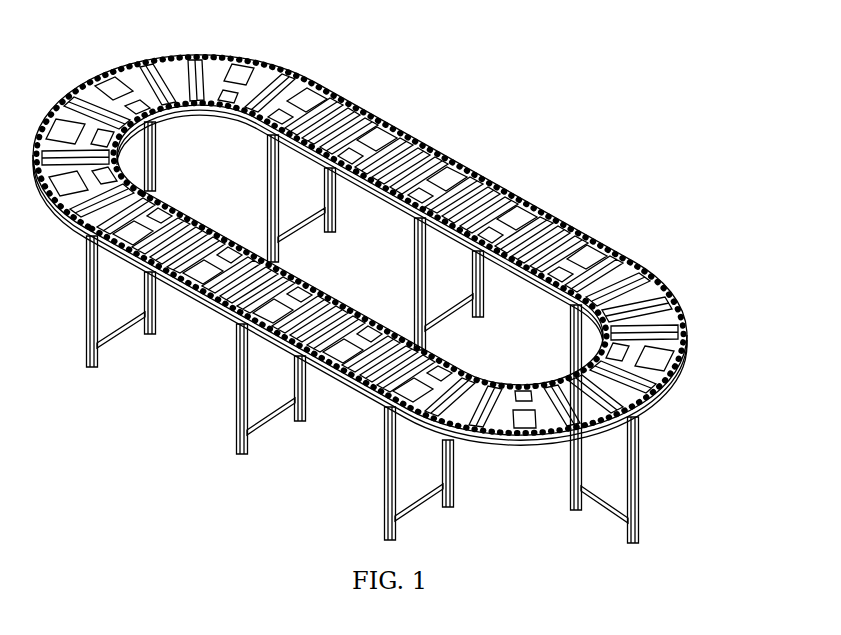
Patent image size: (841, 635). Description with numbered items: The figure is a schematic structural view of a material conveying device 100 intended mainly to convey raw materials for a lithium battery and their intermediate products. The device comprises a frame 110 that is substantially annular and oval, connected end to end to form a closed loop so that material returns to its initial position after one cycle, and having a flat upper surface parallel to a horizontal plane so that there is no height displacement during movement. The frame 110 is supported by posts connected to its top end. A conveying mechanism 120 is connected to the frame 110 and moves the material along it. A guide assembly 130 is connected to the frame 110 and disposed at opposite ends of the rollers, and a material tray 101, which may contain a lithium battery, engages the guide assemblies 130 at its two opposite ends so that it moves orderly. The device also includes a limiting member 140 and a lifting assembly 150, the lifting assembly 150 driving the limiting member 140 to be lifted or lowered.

The material conveying device 100 is at (521, 82).
The material tray 101 is at (476, 176).
The frame 110 is at (688, 357).
The conveying mechanism 120 is at (578, 230).
The guide assembly 130 is at (360, 105).
The limiting member 140 is at (660, 398).
The lifting assembly 150 is at (647, 418).